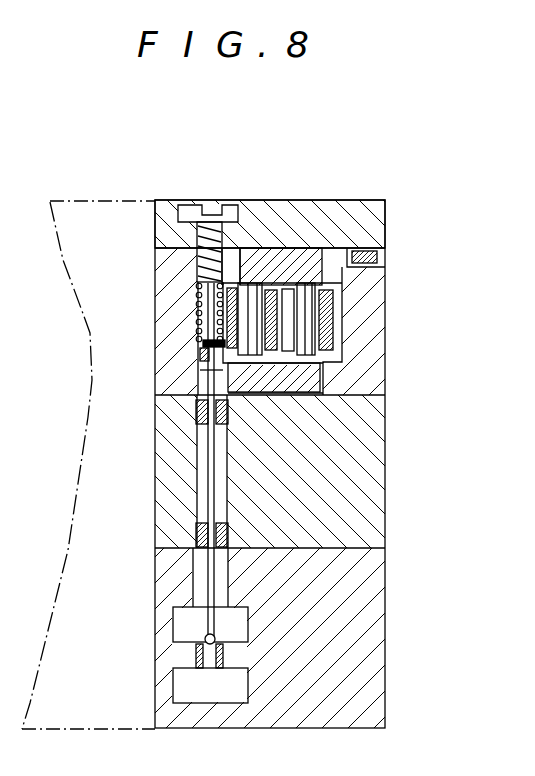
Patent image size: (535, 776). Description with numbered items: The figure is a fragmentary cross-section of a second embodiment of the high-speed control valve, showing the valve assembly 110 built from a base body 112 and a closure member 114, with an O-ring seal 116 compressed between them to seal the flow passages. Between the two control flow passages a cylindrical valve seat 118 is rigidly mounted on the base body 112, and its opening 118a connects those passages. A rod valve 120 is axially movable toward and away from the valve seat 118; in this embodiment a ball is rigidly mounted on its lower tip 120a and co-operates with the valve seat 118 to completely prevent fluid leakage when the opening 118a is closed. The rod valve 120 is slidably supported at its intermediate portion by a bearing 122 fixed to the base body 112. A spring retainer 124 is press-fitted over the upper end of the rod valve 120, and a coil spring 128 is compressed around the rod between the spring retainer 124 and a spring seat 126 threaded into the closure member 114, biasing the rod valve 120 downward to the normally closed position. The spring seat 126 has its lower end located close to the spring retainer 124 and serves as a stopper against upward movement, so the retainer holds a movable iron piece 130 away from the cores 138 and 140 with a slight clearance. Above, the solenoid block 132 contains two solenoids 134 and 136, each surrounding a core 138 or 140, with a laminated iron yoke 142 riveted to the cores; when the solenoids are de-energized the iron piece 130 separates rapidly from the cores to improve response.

The valve assembly 110 is at (388, 580).
The base body 112 is at (372, 660).
The closure member 114 is at (340, 222).
The O-ring seal 116 is at (380, 256).
The valve seat 118 is at (196, 656).
The opening 118a is at (212, 658).
The rod valve 120 is at (193, 588).
The lower tip 120a is at (204, 636).
The bearing 122 is at (196, 412).
The spring retainer 124 is at (198, 352).
The spring seat 126 is at (196, 266).
The coil spring 128 is at (198, 304).
The movable iron piece 130 is at (340, 380).
The solenoid block 132 is at (364, 325).
The solenoid 134 is at (340, 322).
The solenoid 136 is at (340, 300).
The core 138 is at (222, 370).
The core 140 is at (340, 345).
The laminated iron yoke 142 is at (272, 247).